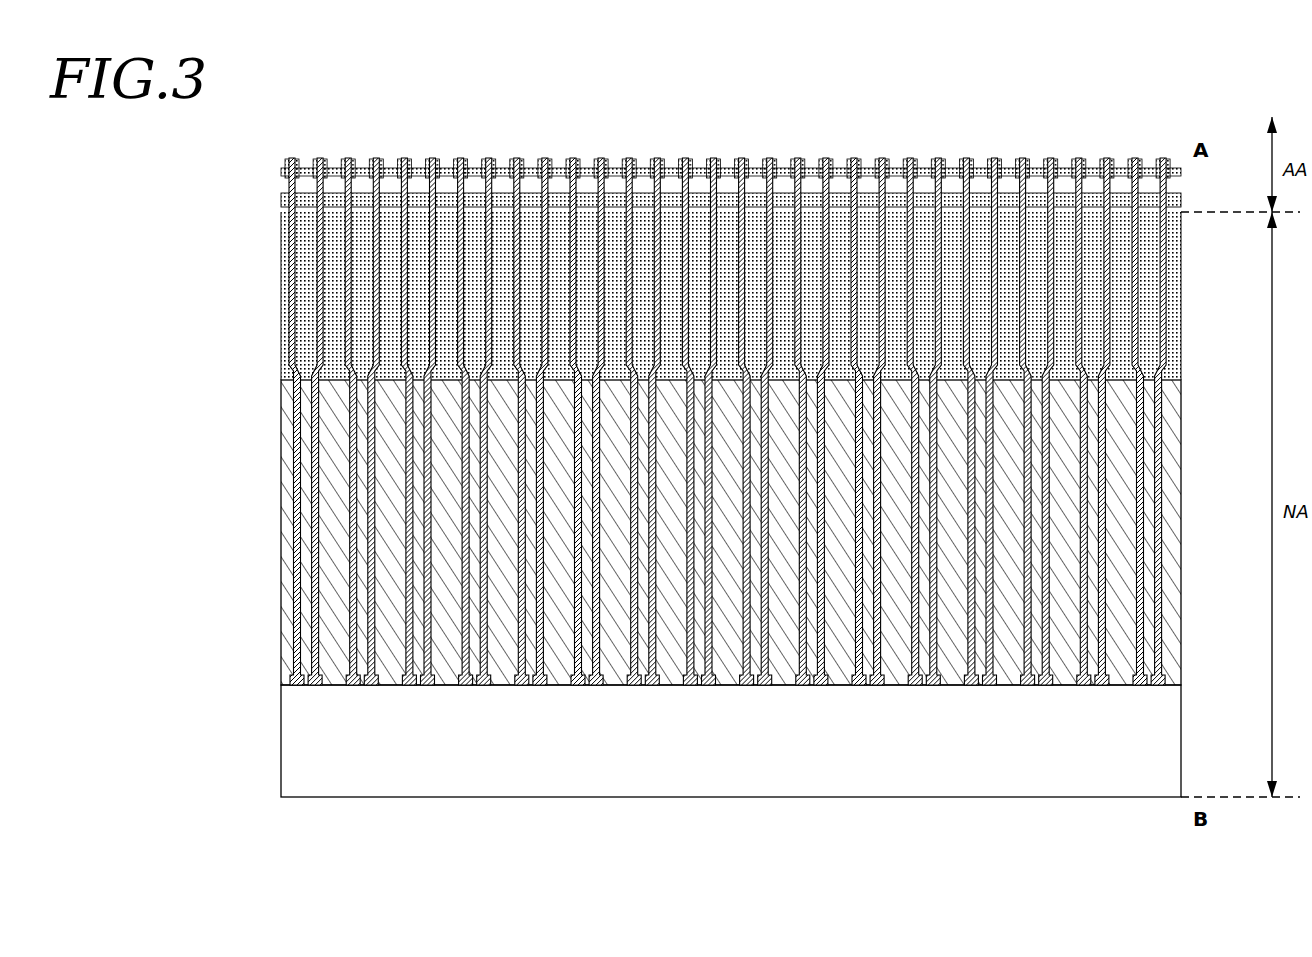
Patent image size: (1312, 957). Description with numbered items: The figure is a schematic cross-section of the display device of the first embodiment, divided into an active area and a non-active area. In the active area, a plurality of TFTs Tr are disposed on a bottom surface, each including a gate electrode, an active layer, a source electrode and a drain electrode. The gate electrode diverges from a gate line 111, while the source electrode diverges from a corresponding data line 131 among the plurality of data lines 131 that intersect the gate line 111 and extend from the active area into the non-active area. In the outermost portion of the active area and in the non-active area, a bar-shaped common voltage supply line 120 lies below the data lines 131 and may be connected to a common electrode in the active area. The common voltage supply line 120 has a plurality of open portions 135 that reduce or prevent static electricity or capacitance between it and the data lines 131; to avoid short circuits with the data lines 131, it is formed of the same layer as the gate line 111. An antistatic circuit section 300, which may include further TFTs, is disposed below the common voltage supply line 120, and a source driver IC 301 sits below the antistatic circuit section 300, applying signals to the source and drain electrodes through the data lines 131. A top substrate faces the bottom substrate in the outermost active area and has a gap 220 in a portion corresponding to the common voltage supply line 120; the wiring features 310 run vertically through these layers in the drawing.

The gate line 111 is at (371, 160).
The common voltage supply line 120 is at (282, 199).
The data line 131 is at (282, 263).
The open portion 135 is at (282, 286).
The gap 220 is at (282, 213).
The antistatic circuit section 300 is at (282, 504).
The source driver IC 301 is at (292, 745).
The connection wiring 310 is at (291, 180).
The TFT Tr is at (295, 150).